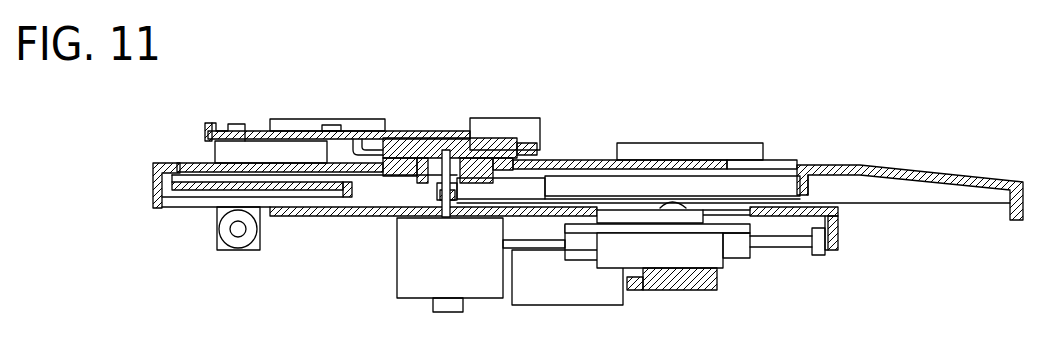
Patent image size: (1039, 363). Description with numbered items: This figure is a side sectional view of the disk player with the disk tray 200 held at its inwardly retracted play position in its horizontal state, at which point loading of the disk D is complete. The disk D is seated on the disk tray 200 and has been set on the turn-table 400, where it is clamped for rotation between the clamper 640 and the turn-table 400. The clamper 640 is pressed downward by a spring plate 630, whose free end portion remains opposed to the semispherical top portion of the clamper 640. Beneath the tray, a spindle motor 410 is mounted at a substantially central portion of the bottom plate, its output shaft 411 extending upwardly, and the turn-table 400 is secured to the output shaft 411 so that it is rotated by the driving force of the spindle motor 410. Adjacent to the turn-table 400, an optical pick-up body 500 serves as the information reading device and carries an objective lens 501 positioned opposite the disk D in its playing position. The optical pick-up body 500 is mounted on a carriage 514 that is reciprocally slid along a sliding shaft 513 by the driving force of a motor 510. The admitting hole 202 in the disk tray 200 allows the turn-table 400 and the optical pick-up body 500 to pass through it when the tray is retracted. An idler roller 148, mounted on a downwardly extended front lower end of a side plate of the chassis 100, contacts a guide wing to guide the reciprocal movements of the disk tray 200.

The disk D is at (293, 163).
The chassis 100 is at (841, 228).
The idler roller 148 is at (239, 250).
The disk tray 200 is at (901, 171).
The admitting hole 202 is at (358, 192).
The turn-table 400 is at (423, 183).
The spindle motor 410 is at (421, 290).
The output shaft 411 is at (443, 190).
The optical pick-up body 500 is at (633, 213).
The objective lens 501 is at (671, 203).
The motor 510 is at (535, 290).
The sliding shaft 513 is at (785, 242).
The carriage 514 is at (739, 250).
The spring plate 630 is at (414, 133).
The clamper 640 is at (487, 141).